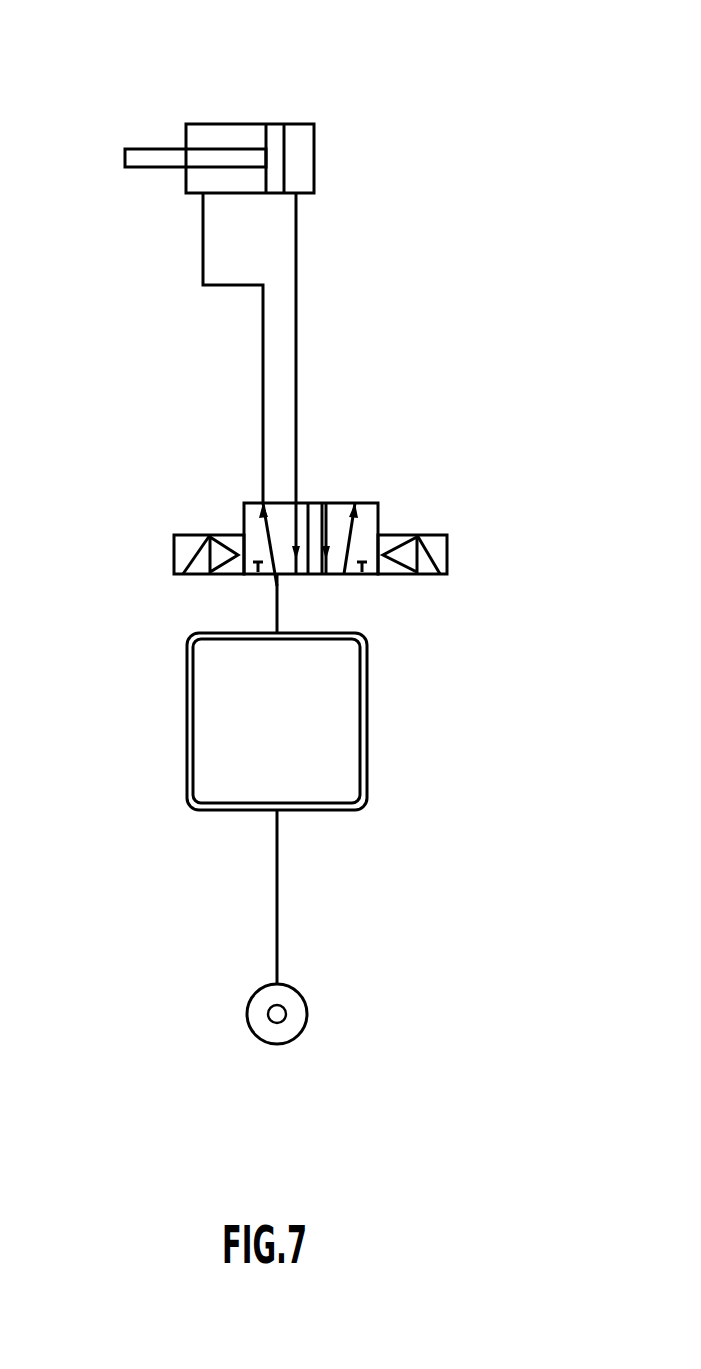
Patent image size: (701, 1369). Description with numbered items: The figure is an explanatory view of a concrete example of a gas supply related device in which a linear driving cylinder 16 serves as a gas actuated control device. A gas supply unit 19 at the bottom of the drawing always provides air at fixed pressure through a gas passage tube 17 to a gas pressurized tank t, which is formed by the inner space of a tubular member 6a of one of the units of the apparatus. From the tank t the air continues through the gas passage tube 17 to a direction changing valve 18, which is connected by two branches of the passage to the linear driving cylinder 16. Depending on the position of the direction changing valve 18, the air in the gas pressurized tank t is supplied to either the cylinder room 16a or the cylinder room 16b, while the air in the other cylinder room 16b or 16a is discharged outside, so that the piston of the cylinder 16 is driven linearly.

The linear driving cylinder 16 is at (280, 96).
The cylinder room 16a is at (217, 138).
The cylinder room 16b is at (298, 159).
The gas passage tube 17 is at (328, 383).
The direction changing valve 18 is at (413, 508).
The tubular member 6a is at (276, 721).
The gas pressurized tank t is at (378, 725).
The gas supply unit 19 is at (285, 1043).